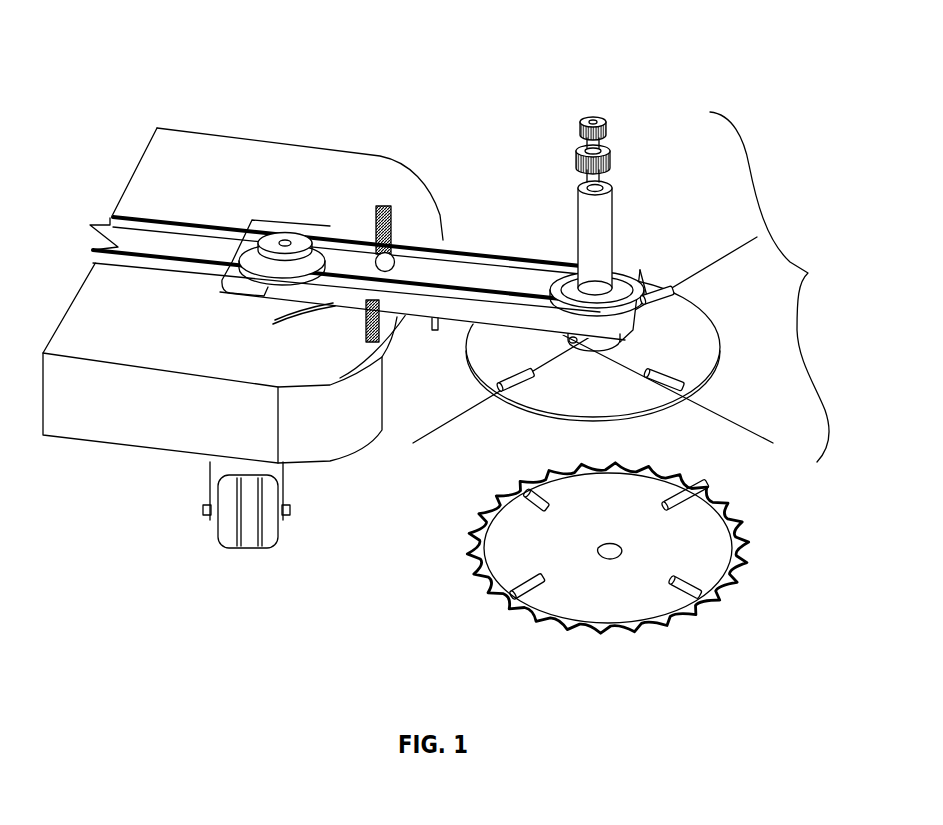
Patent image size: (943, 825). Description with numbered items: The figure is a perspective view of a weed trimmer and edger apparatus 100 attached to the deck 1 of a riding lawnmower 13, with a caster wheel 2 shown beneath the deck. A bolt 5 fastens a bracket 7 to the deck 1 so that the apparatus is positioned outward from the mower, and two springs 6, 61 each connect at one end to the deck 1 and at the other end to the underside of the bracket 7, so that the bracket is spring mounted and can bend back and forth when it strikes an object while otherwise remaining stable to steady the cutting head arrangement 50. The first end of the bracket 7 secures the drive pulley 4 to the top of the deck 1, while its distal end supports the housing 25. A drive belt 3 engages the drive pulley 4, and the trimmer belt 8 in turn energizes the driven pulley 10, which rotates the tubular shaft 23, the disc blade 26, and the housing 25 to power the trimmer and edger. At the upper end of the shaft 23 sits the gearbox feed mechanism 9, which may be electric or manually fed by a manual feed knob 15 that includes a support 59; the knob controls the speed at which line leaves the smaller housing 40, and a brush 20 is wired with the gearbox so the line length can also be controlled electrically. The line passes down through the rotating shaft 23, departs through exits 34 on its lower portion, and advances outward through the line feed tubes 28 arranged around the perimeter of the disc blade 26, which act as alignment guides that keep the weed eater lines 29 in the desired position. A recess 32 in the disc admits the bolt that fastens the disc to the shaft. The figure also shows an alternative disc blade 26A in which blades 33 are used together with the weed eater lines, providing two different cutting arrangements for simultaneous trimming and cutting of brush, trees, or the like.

The weed trimmer and edger apparatus 100 is at (148, 50).
The riding lawnmower 13 is at (152, 106).
The deck 1 is at (75, 305).
The caster wheel 2 is at (248, 545).
The drive belt 3 is at (123, 212).
The drive pulley 4 is at (268, 295).
The bolt 5 is at (393, 258).
The spring 6 is at (375, 218).
The bracket 7 is at (457, 313).
The trimmer belt 8 is at (465, 253).
The spring 61 is at (362, 326).
The gearbox feed mechanism 9 is at (613, 186).
The housing 40 is at (584, 183).
The manual feed knob 15 is at (600, 112).
The support 59 is at (612, 146).
The brush 20 is at (570, 275).
The shaft 23 is at (612, 247).
The driven pulley 10 is at (627, 274).
The housing 25 is at (622, 336).
The disc blade 26 is at (708, 340).
The disc blade 26A is at (596, 574).
The line feed tubes 28 is at (673, 292).
The weed eater lines 29 is at (420, 440).
The exits 34 is at (580, 346).
The recess 32 is at (622, 551).
The blades 33 is at (472, 578).
The cutting head arrangement 50 is at (774, 287).